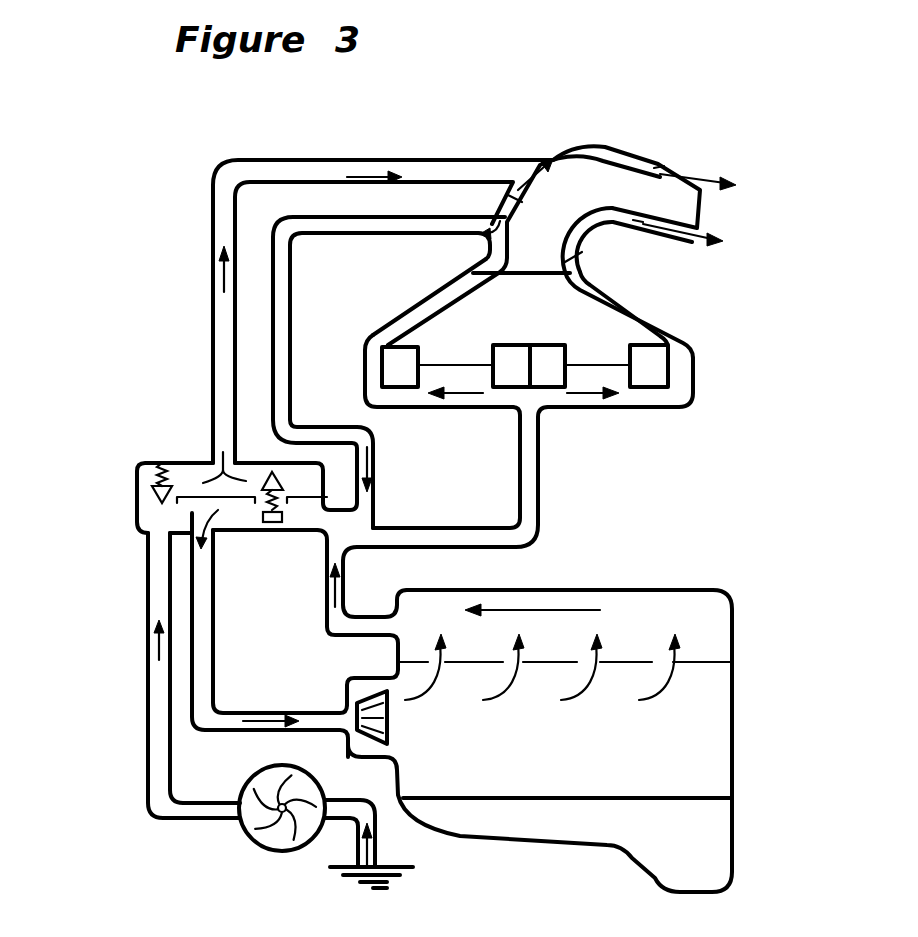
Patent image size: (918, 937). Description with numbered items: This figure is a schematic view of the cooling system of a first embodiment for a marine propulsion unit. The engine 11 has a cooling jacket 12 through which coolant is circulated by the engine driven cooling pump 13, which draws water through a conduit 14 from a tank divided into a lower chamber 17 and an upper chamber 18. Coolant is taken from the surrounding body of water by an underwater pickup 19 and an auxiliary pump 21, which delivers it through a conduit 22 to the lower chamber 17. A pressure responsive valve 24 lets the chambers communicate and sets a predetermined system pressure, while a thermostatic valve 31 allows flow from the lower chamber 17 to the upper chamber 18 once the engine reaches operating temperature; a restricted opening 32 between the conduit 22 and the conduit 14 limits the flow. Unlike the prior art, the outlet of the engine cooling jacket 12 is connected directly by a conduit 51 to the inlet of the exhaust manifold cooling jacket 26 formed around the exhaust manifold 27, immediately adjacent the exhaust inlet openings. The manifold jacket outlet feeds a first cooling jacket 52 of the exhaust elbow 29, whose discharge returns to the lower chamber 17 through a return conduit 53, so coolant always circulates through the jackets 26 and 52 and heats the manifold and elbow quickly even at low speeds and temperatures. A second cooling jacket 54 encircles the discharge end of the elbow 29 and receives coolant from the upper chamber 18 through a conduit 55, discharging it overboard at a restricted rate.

The engine 11 is at (748, 621).
The cooling jacket 12 is at (717, 747).
The cooling pump 13 is at (360, 746).
The conduit 14 is at (218, 723).
The lower chamber 17 is at (145, 505).
The upper chamber 18 is at (147, 477).
The underwater pickup 19 is at (377, 837).
The auxiliary pump 21 is at (247, 833).
The conduit 22 is at (157, 705).
The pressure responsive valve 24 is at (178, 487).
The exhaust manifold cooling jacket 26 is at (380, 330).
The exhaust manifold 27 is at (607, 327).
The exhaust elbow 29 is at (577, 132).
The thermostatic valve 31 is at (279, 483).
The restricted opening 32 is at (185, 518).
The conduit 51 is at (340, 623).
The first cooling jacket 52 is at (574, 263).
The return conduit 53 is at (277, 252).
The second cooling jacket 54 is at (552, 158).
The conduit 55 is at (220, 240).